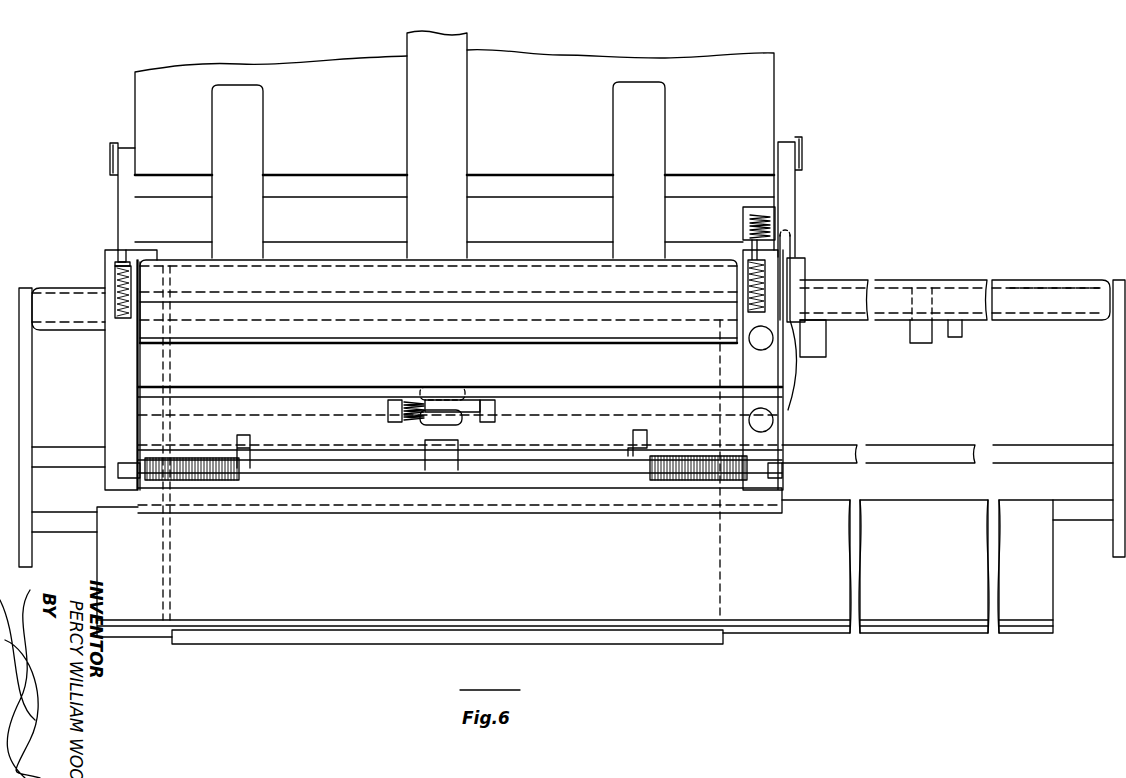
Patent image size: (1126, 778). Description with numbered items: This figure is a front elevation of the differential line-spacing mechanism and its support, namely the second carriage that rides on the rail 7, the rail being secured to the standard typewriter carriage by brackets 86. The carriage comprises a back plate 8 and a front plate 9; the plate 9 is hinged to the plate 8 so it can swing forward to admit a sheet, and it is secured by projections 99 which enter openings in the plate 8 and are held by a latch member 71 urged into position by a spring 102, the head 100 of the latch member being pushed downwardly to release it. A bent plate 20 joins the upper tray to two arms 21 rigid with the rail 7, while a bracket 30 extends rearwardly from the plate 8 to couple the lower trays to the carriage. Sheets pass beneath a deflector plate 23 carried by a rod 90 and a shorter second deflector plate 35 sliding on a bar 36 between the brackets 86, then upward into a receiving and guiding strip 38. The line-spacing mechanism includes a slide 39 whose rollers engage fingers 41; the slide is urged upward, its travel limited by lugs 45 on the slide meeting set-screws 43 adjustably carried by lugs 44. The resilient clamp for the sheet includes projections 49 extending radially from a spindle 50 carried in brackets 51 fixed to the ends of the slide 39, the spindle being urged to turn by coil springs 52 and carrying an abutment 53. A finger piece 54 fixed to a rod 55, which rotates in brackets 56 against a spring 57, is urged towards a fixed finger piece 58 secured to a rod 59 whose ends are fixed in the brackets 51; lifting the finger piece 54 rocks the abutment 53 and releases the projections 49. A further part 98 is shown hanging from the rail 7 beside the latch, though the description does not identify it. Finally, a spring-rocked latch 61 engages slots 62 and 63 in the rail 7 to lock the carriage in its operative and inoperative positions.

The rail 7 is at (1070, 294).
The back plate 8 is at (172, 256).
The plate 9 is at (784, 497).
The bent plate 20 is at (769, 102).
The arms 21 is at (119, 193).
The deflector plate 23 is at (104, 562).
The bracket 30 is at (790, 380).
The second deflector plate 35 is at (322, 634).
The bar 36 is at (74, 458).
The receiving and guiding strip 38 is at (437, 144).
The slide 39 is at (367, 260).
The fingers 41 is at (438, 170).
The set-screws 43 is at (118, 254).
The lugs 44 is at (115, 266).
The lugs 45 is at (118, 470).
The projections 49 is at (250, 443).
The spindle 50 is at (548, 470).
The brackets 51 is at (138, 366).
The coil springs 52 is at (198, 458).
The abutment 53 is at (436, 455).
The finger piece 54 is at (462, 418).
The rod 55 is at (468, 400).
The brackets 56 is at (392, 400).
The spring 57 is at (414, 421).
The fixed finger piece 58 is at (450, 387).
The rod 59 is at (322, 390).
The latch 61 is at (826, 348).
The slot 62 is at (1018, 290).
The slot 63 is at (806, 296).
The latch member 71 is at (770, 232).
The brackets 86 is at (31, 370).
The rod 90 is at (80, 520).
The shaft collar 98 is at (918, 343).
The projections 99 is at (761, 408).
The head 100 is at (756, 207).
The spring 102 is at (745, 226).